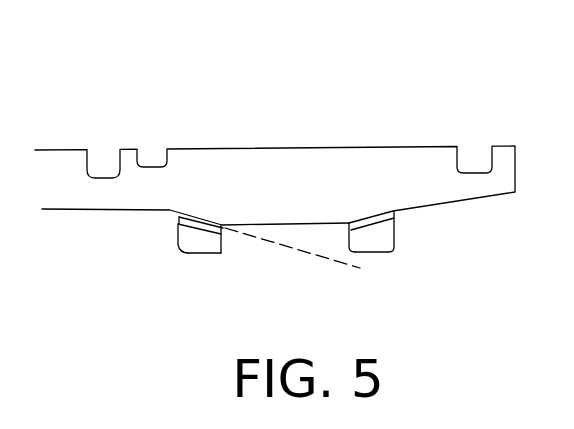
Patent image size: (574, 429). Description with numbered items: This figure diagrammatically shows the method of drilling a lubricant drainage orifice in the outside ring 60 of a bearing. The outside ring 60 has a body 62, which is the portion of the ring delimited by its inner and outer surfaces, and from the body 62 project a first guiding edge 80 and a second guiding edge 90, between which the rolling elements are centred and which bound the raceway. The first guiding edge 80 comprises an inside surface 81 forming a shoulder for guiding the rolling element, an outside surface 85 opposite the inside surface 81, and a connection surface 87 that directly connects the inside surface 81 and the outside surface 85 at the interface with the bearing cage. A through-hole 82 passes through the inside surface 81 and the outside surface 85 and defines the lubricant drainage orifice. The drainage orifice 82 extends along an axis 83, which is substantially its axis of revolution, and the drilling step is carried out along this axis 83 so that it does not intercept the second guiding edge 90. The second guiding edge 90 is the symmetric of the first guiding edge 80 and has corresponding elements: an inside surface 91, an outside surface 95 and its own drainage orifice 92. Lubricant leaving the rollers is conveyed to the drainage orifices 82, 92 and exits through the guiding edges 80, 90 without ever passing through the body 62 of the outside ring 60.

The outside ring 60 is at (405, 130).
The body 62 is at (226, 166).
The first guiding edge 80 is at (172, 236).
The inside surface 81 is at (222, 246).
The through-hole 82 is at (192, 217).
The axis of the drainage orifice 83 is at (283, 246).
The outside surface 85 is at (177, 243).
The connection surface 87 is at (203, 255).
The second guiding edge 90 is at (404, 227).
The inside surface of the second guiding edge 91 is at (349, 236).
The drainage orifice of the second guiding edge 92 is at (387, 218).
The outside surface of the second guiding edge 95 is at (398, 241).